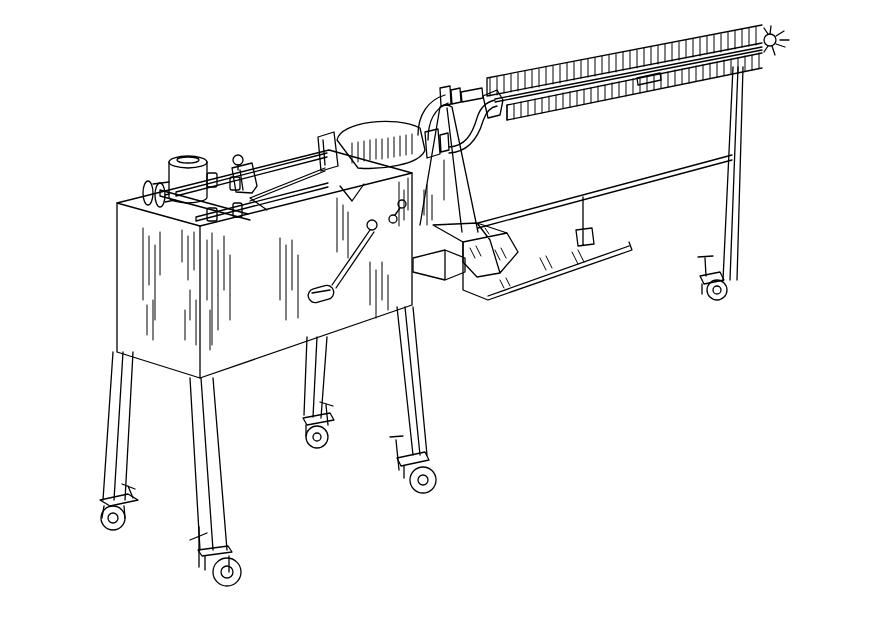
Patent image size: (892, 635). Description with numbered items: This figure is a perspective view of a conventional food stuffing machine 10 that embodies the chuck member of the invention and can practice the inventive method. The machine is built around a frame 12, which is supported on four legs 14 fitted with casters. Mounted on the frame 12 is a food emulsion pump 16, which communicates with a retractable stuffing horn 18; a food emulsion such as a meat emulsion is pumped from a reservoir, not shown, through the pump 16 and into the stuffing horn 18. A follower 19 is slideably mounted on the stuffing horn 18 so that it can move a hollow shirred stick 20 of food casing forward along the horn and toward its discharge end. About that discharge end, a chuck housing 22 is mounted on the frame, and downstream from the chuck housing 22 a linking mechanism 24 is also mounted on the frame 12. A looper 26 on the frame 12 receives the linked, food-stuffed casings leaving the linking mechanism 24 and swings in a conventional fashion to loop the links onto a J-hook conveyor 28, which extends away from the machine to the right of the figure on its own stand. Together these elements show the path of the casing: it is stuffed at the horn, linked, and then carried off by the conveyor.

The stuffing machine 10 is at (111, 224).
The frame 12 is at (117, 262).
The legs 14 is at (197, 484).
The food emulsion pump 16 is at (183, 160).
The stuffing horn 18 is at (229, 170).
The follower 19 is at (245, 156).
The shirred stick 20 is at (272, 167).
The chuck housing 22 is at (323, 140).
The linking mechanism 24 is at (387, 127).
The looper 26 is at (473, 140).
The J-hook conveyor 28 is at (581, 58).